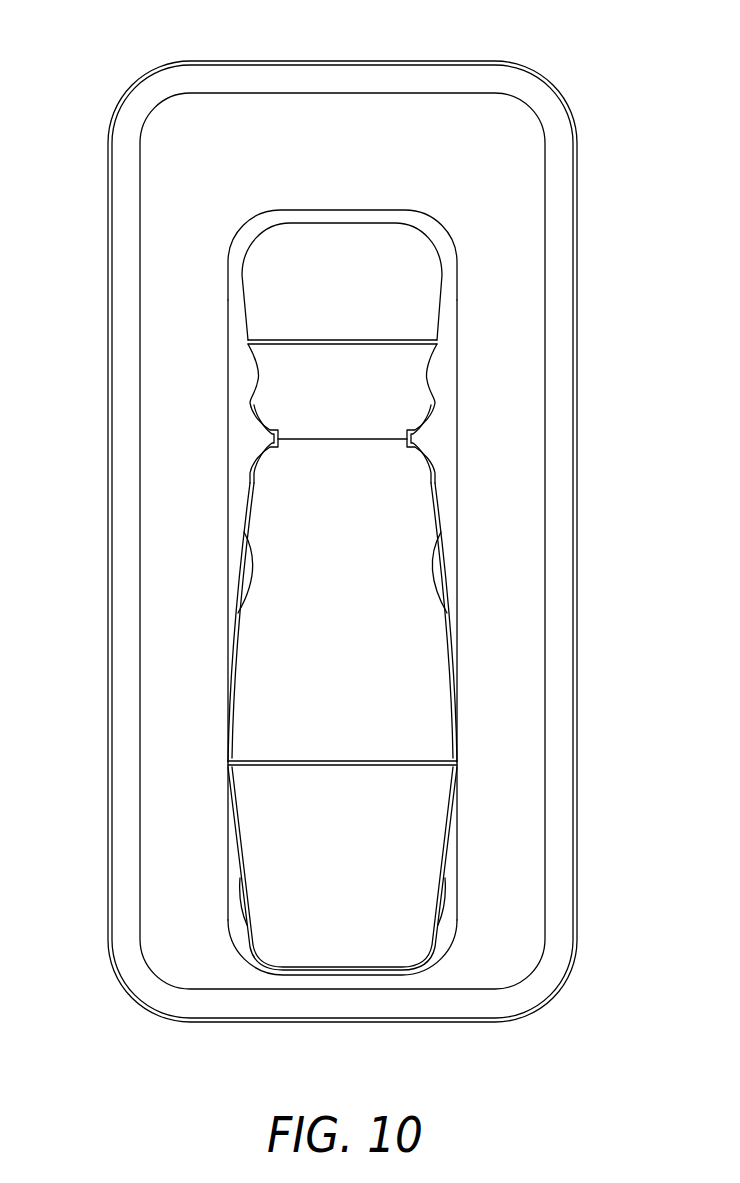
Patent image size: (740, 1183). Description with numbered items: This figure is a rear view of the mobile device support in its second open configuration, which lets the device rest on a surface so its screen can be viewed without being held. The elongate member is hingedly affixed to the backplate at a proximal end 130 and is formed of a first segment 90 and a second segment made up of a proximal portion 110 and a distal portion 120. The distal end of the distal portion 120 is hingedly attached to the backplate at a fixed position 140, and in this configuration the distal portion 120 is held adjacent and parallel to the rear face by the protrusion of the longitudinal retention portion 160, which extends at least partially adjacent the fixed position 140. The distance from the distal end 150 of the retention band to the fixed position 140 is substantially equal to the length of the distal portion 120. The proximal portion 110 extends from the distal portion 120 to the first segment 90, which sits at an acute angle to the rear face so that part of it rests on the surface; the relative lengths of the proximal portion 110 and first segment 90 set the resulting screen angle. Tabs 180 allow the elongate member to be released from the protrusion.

The first segment 90 is at (391, 855).
The proximal portion 110 is at (391, 655).
The distal portion 120 is at (391, 390).
The proximal end 130 is at (343, 976).
The fixed position 140 is at (396, 337).
The distal end of retention band 150 is at (343, 217).
The longitudinal retention portion 160 is at (238, 440).
The tabs 180 is at (243, 570).